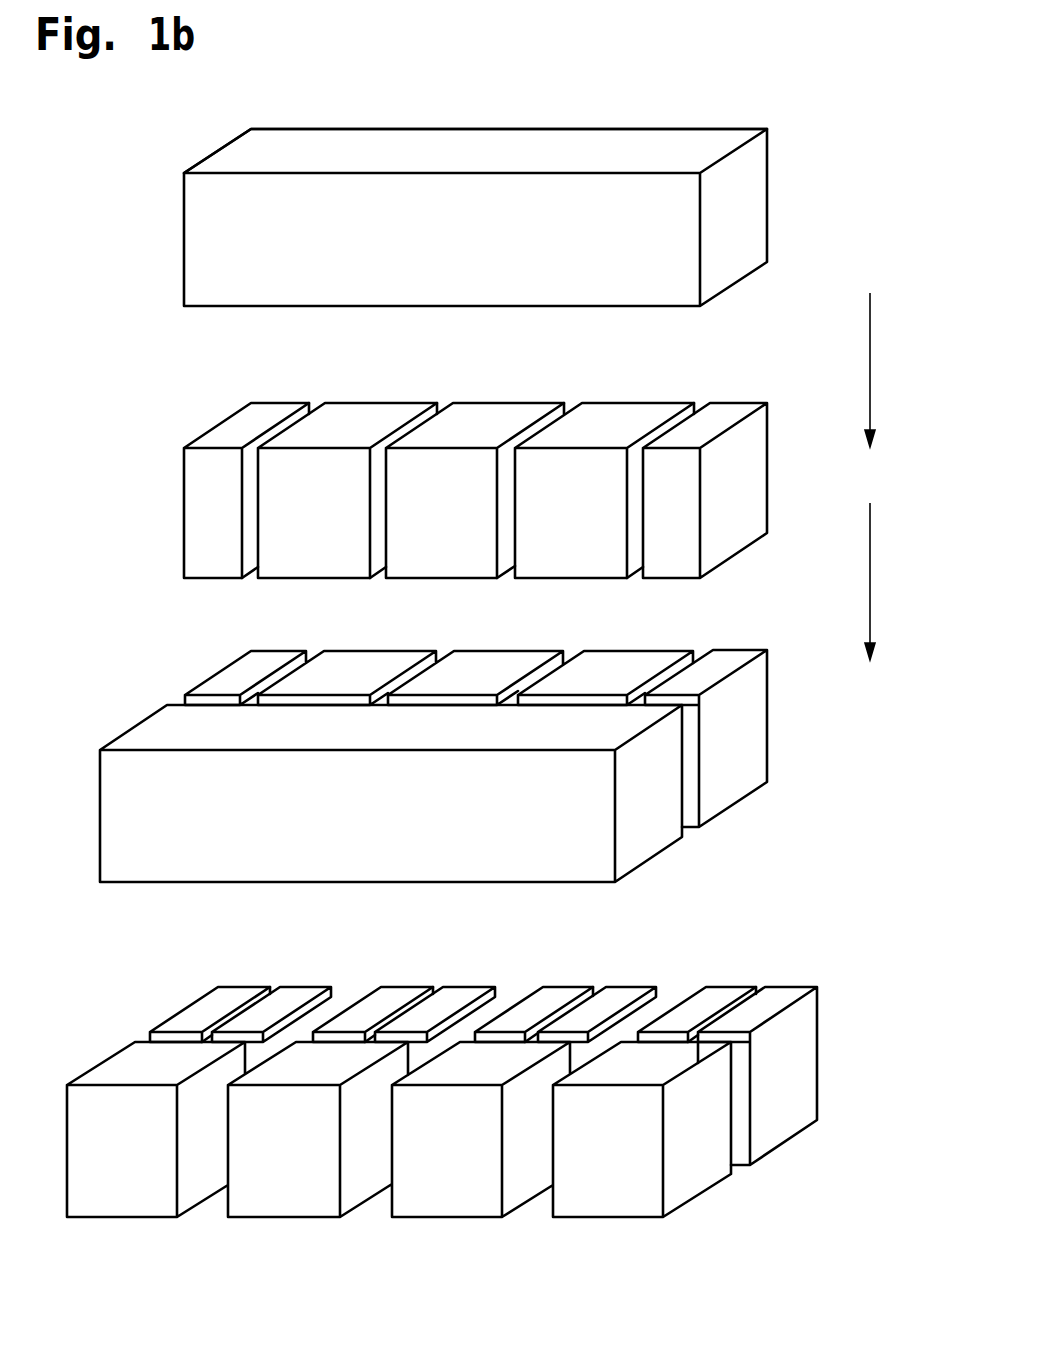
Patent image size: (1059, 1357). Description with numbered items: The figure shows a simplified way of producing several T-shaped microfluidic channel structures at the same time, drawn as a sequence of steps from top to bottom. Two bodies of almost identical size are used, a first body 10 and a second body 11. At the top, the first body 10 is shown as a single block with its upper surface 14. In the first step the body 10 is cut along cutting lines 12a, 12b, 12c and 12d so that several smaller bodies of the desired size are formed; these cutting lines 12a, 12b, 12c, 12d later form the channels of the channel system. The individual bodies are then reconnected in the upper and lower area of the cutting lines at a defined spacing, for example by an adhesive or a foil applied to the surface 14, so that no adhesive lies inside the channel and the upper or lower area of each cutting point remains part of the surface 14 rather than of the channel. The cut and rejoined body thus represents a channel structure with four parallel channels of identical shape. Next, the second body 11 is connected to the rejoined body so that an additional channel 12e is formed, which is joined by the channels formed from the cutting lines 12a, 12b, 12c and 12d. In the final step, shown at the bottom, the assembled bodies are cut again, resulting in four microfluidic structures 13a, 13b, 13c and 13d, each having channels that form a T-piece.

The body 10 is at (503, 326).
The surface 14 is at (305, 143).
The cutting line 12a is at (314, 402).
The cutting line 12b is at (442, 402).
The cutting line 12c is at (569, 402).
The cutting line 12d is at (697, 402).
The additional channel 12e is at (690, 803).
The second body 11 is at (663, 843).
The microfluidic structure 13a is at (277, 978).
The microfluidic structure 13b is at (442, 978).
The microfluidic structure 13c is at (602, 978).
The microfluidic structure 13d is at (763, 978).